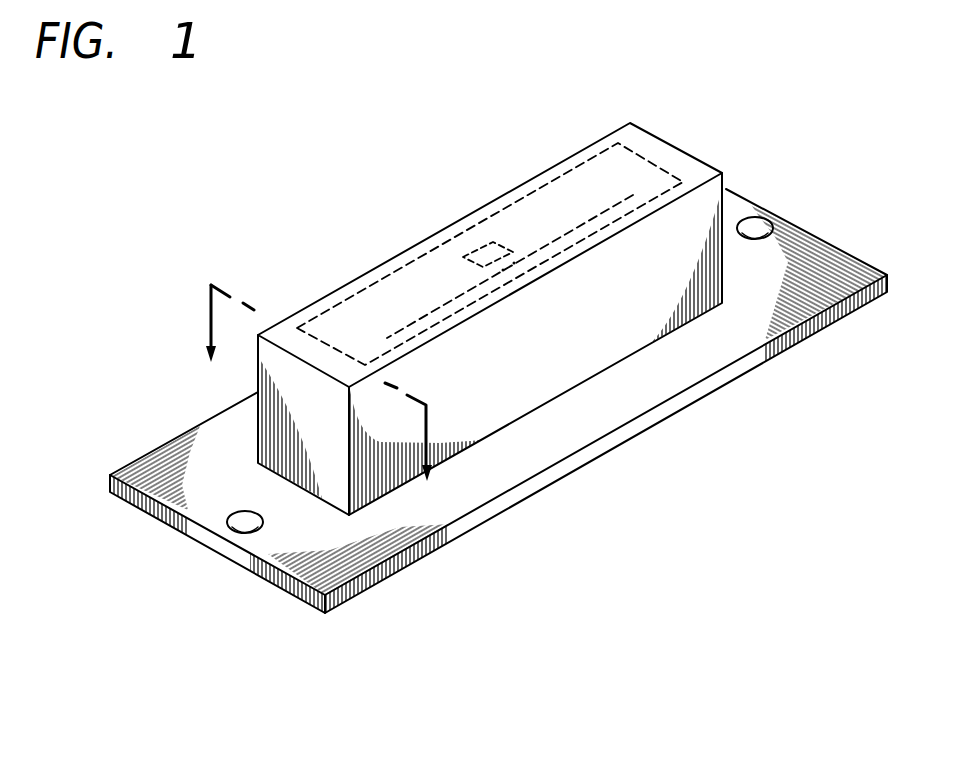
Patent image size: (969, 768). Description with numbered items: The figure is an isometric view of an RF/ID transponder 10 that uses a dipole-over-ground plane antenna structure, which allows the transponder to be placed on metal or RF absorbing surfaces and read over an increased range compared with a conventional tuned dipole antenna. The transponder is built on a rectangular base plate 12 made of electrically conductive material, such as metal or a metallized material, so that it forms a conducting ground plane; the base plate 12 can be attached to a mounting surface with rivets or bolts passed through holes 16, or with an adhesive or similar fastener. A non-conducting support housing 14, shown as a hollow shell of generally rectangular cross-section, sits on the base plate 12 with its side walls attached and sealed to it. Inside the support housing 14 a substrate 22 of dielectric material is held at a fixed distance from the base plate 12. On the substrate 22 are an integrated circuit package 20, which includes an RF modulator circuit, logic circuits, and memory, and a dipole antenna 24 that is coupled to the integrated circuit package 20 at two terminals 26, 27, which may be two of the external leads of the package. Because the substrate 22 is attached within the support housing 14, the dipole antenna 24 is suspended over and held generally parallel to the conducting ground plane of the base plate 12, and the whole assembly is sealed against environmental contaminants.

The RF/ID transponder 10 is at (243, 199).
The base plate 12 is at (637, 395).
The support housing 14 is at (690, 207).
The holes 16 is at (236, 514).
The integrated circuit package 20 is at (484, 252).
The substrate 22 is at (397, 307).
The dipole antenna 24 is at (575, 228).
The terminal 26 is at (504, 270).
The terminal 27 is at (515, 262).